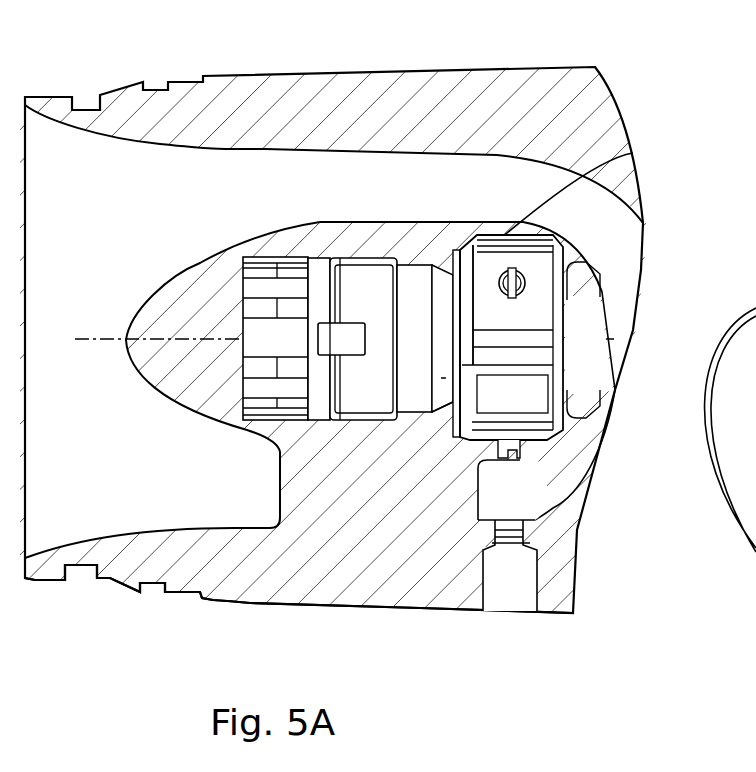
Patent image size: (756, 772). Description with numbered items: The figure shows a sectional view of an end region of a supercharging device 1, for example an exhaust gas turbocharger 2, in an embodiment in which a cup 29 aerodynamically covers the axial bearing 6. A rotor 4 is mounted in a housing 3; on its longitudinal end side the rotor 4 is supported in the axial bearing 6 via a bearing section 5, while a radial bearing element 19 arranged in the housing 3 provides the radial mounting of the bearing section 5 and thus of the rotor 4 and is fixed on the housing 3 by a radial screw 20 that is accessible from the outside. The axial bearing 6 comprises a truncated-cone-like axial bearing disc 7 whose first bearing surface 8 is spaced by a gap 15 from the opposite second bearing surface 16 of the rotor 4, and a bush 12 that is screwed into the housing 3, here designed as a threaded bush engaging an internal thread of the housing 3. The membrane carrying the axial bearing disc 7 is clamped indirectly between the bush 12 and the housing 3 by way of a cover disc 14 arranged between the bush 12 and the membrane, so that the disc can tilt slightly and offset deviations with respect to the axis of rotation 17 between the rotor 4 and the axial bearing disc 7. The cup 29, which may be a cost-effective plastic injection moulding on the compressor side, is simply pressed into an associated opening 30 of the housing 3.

The supercharging device 1 is at (378, 386).
The exhaust gas turbocharger 2 is at (638, 82).
The housing 3 is at (257, 592).
The rotor 4 is at (590, 357).
The bearing section 5 is at (540, 297).
The axial bearing 6 is at (453, 265).
The axial bearing disc 7 is at (458, 402).
The first bearing surface 8 is at (633, 153).
The bush 12 is at (360, 274).
The cover disc 14 is at (410, 274).
The gap 15 is at (441, 378).
The second bearing surface 16 is at (473, 317).
The axis of rotation 17 is at (97, 332).
The radial bearing element 19 is at (512, 266).
The radial screw 20 is at (520, 458).
The cup 29 is at (193, 387).
The opening 30 is at (318, 257).